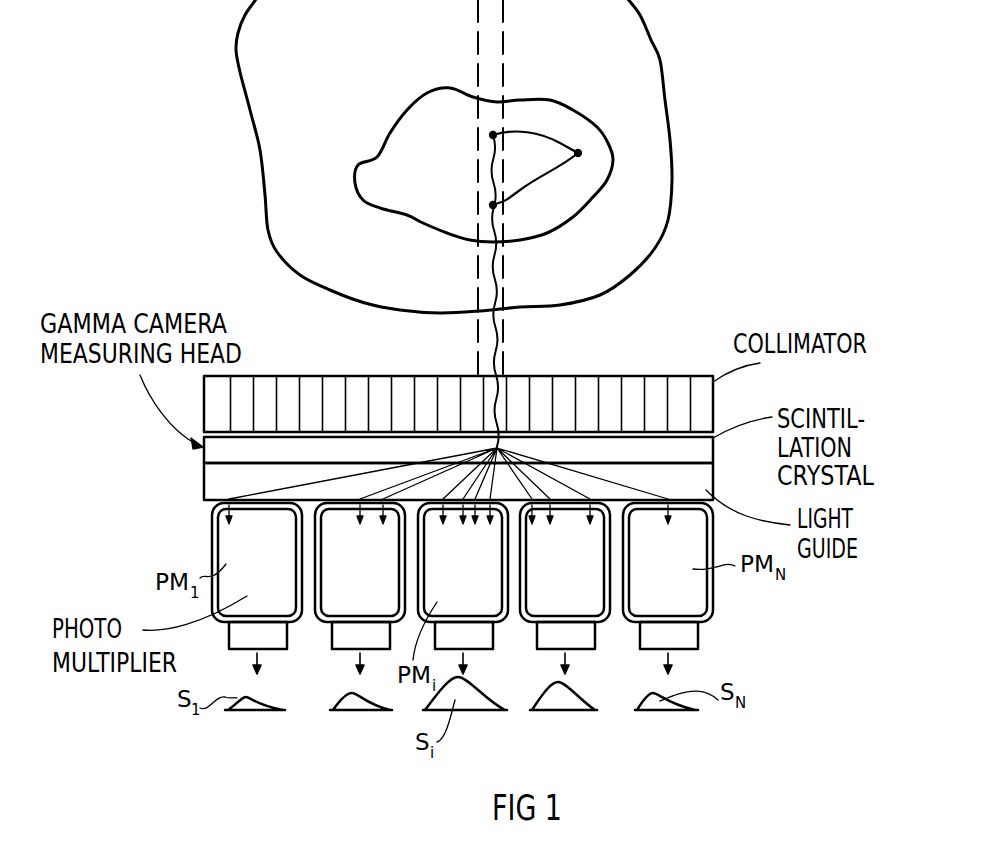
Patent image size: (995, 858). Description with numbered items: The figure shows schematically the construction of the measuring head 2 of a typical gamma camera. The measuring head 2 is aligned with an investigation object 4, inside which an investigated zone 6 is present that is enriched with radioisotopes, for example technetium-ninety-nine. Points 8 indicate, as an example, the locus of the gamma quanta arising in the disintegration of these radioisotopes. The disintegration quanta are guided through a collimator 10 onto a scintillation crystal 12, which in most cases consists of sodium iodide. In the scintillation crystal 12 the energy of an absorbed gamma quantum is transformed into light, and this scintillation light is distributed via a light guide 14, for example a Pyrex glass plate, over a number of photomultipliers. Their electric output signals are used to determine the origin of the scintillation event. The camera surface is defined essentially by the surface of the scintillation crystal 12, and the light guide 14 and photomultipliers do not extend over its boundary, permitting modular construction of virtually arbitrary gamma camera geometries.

The measuring head 2 is at (458, 454).
The investigation object 4 is at (660, 68).
The investigated zone 6 is at (396, 125).
The points 8 is at (496, 135).
The collimator 10 is at (713, 397).
The scintillation crystal 12 is at (713, 447).
The light guide 14 is at (713, 480).